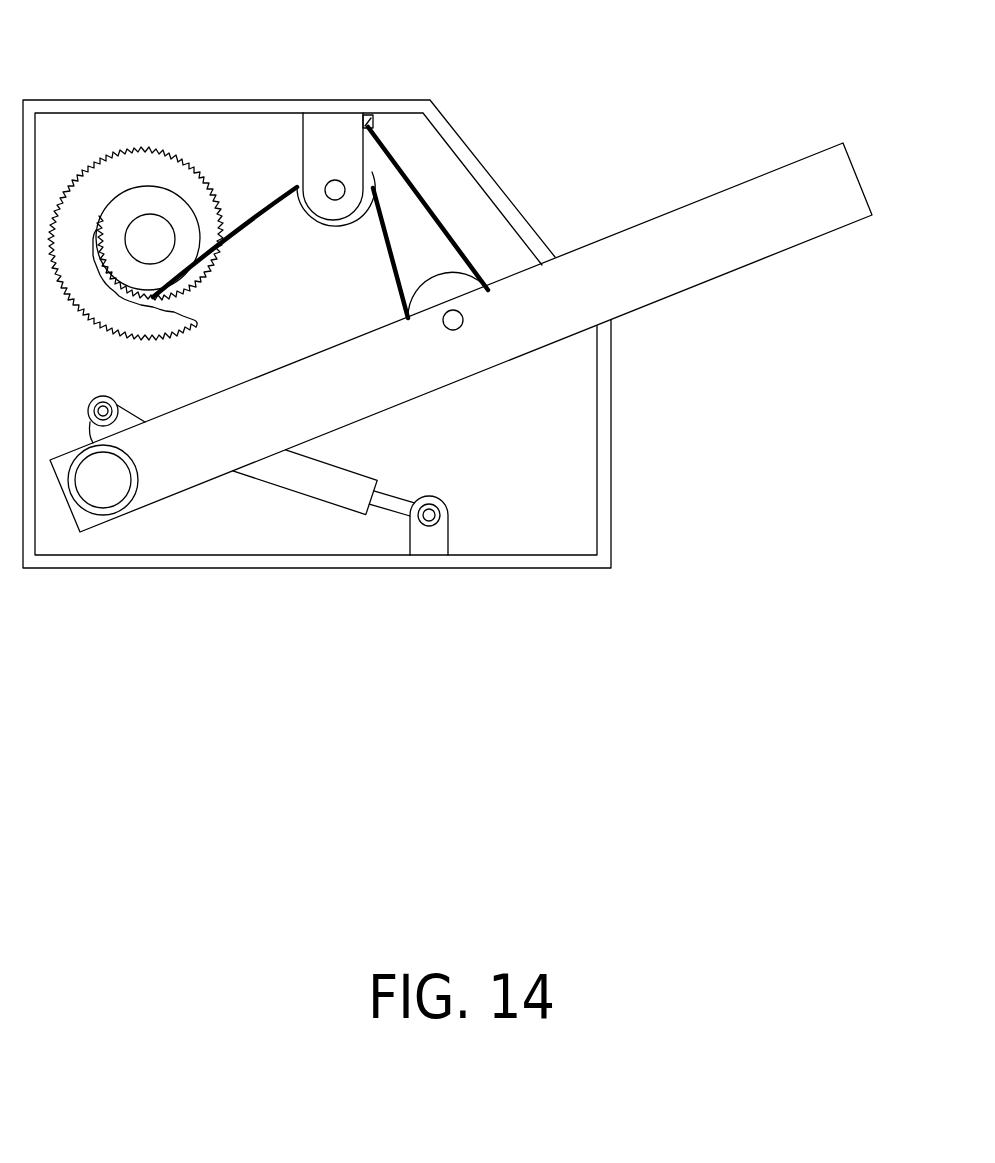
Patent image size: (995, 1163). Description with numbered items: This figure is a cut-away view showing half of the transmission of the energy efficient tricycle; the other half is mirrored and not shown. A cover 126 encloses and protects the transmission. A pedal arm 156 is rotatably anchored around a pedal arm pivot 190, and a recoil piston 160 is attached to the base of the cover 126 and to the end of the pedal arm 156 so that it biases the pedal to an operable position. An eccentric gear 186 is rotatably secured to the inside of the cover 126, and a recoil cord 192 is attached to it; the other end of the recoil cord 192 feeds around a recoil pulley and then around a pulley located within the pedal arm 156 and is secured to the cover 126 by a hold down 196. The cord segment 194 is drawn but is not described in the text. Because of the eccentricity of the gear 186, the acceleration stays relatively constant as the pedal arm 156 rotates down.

The cover 126 is at (602, 535).
The pedal arm 156 is at (670, 282).
The recoil piston 160 is at (317, 487).
The eccentric gear 186 is at (127, 173).
The pedal arm pivot 190 is at (120, 505).
The recoil cord 192 is at (437, 218).
The cable segment 194 is at (297, 180).
The hold down 196 is at (372, 125).